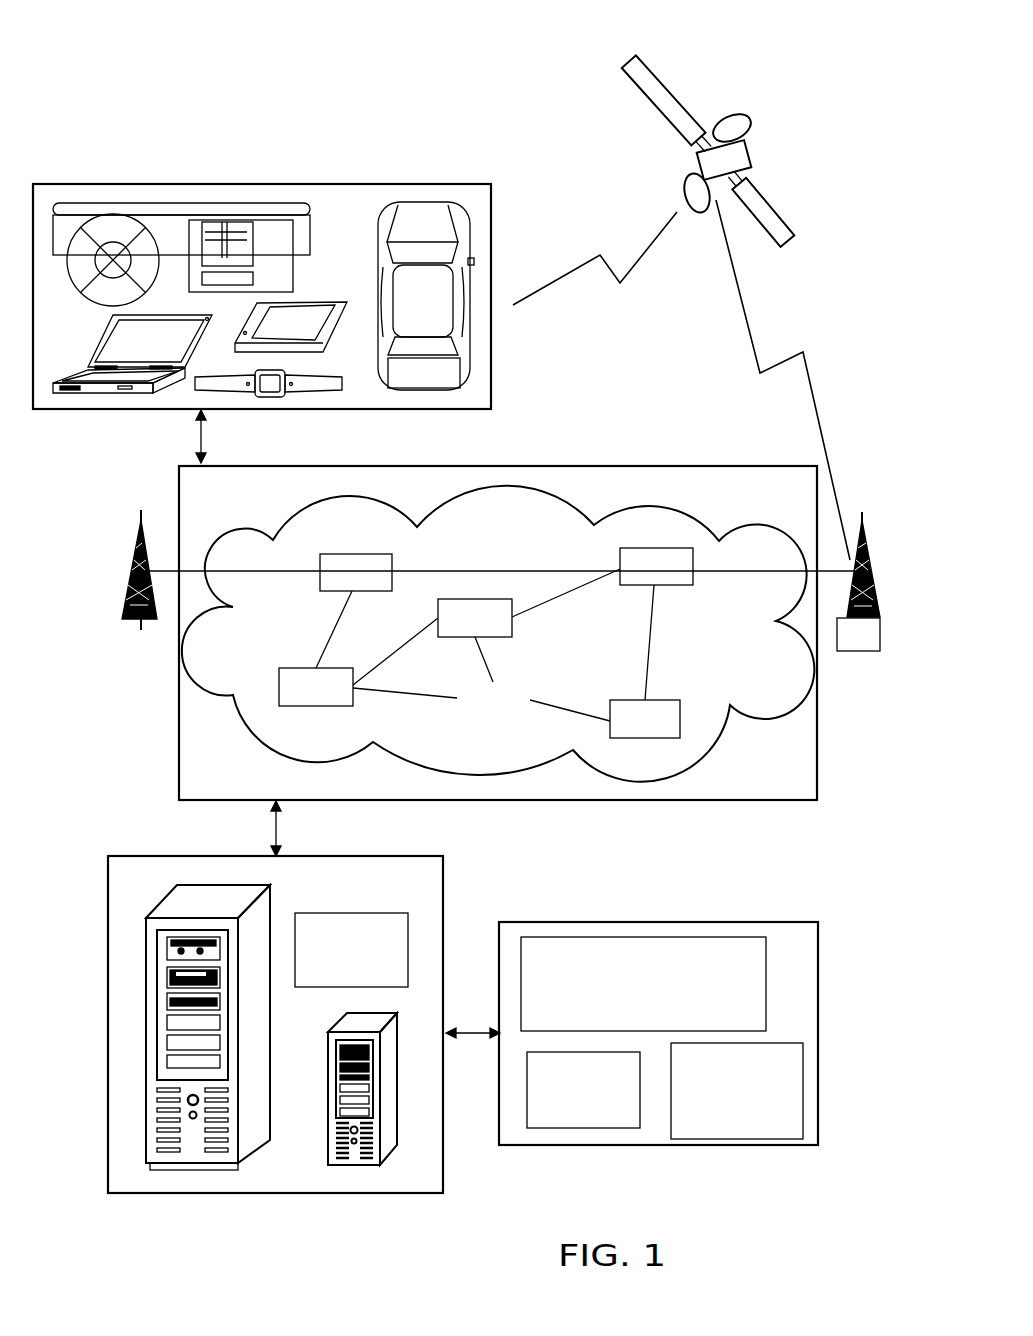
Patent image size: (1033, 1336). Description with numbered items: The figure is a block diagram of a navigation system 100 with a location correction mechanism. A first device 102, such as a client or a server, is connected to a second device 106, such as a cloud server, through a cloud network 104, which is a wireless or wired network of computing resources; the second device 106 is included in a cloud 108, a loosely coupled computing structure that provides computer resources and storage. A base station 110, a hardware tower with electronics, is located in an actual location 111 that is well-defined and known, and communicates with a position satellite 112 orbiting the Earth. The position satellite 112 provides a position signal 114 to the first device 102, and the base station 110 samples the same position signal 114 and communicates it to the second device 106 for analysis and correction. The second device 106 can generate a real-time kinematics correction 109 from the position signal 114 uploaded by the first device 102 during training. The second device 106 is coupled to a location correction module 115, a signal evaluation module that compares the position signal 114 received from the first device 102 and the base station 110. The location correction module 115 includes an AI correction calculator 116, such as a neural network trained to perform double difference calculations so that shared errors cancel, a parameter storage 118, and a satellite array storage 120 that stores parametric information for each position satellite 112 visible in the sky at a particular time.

The navigation system 100 is at (226, 40).
The first device 102 is at (42, 192).
The cloud network 104 is at (800, 725).
The second device 106 is at (427, 920).
The cloud 108 is at (206, 690).
The real-time kinematics (RTK) correction 109 is at (337, 979).
The base station 110 is at (875, 580).
The actual location 111 is at (855, 632).
The position satellite 112 is at (756, 160).
The position signal 114 is at (755, 343).
The location correction module 115 is at (808, 945).
The AI correction calculator 116 is at (557, 955).
The parameter storage 118 is at (793, 1098).
The satellite array storage 120 is at (537, 1083).